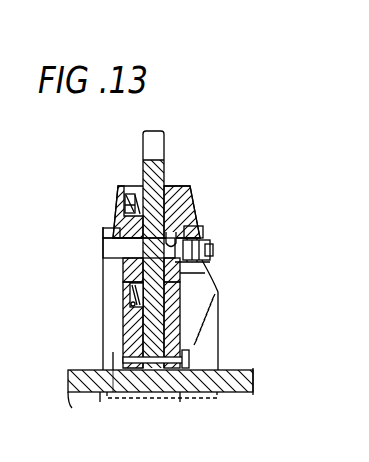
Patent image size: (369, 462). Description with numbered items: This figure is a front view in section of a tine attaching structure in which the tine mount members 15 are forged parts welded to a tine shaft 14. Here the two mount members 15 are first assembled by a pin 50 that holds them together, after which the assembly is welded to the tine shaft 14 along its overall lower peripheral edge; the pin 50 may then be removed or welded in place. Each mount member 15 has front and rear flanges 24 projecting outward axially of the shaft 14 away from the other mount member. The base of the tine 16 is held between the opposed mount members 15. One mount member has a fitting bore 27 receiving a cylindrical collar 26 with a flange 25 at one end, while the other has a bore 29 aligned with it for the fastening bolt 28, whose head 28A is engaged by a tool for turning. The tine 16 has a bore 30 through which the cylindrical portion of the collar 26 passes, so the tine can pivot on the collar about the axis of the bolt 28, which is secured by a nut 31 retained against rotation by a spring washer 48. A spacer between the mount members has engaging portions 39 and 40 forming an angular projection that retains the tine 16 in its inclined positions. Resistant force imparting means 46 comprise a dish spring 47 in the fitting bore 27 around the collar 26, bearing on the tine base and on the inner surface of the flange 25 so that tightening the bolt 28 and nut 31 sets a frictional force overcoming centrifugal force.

The tine shaft 14 is at (241, 386).
The tine mount member 15 is at (99, 353).
The tine 16 is at (172, 149).
The flange 24 is at (112, 372).
The flange 25 is at (130, 300).
The cylindrical collar 26 is at (125, 268).
The fitting bore 27 is at (132, 281).
The fastening bolt 28 is at (211, 249).
The flange plate 28A is at (118, 234).
The bore 29 is at (180, 188).
The bore 30 is at (192, 267).
The nut 31 is at (200, 274).
The engaging portion 39 is at (162, 395).
The engaging portion 40 is at (153, 380).
The resistant force imparting means 46 is at (126, 201).
The dish spring 47 is at (137, 212).
The spring washer 48 is at (192, 228).
The pin 50 is at (219, 361).